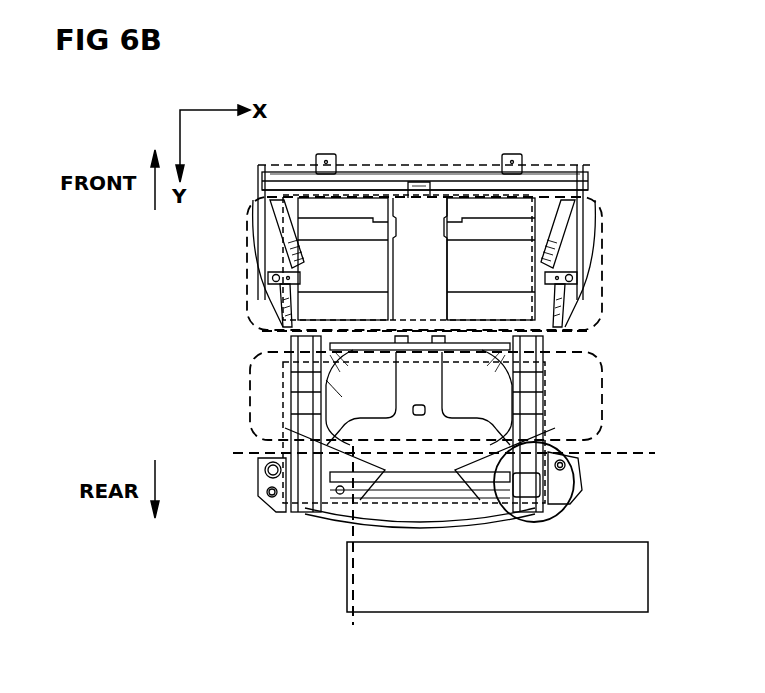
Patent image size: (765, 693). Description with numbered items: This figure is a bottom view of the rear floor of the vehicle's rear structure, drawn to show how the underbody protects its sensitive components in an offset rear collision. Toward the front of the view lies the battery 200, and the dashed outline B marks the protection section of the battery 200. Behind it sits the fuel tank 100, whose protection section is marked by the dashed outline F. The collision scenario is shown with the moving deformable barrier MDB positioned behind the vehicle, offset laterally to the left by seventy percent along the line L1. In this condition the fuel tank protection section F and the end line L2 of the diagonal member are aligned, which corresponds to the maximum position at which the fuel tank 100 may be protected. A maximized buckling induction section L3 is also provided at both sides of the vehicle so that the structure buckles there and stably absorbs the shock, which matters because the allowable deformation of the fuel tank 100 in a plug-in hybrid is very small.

The fuel tank 100 is at (342, 397).
The battery 200 is at (320, 266).
The protection section of the battery B is at (432, 263).
The protection section of the fuel tank F is at (434, 394).
The left lateral offset line L1 is at (352, 547).
The end line of the diagonal member L2 is at (460, 455).
The maximized buckling induction section L3 is at (539, 488).
The moving deformable barrier MDB is at (497, 577).